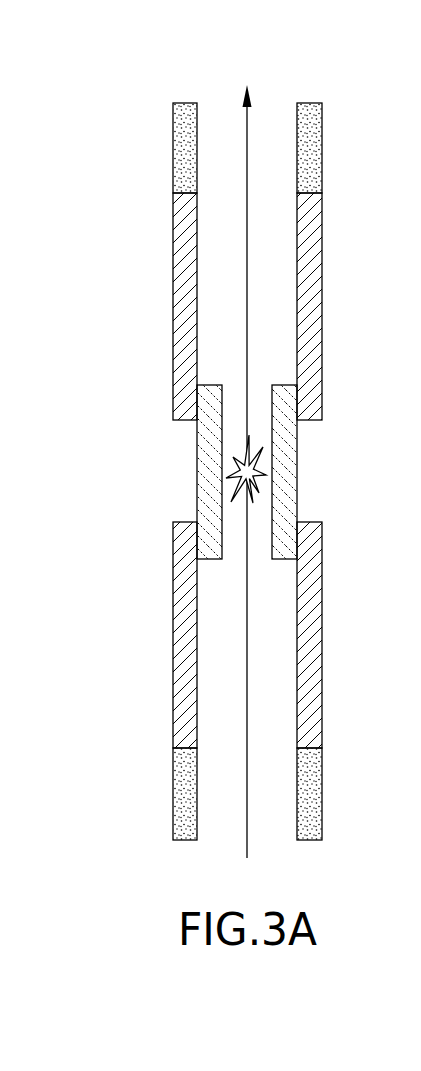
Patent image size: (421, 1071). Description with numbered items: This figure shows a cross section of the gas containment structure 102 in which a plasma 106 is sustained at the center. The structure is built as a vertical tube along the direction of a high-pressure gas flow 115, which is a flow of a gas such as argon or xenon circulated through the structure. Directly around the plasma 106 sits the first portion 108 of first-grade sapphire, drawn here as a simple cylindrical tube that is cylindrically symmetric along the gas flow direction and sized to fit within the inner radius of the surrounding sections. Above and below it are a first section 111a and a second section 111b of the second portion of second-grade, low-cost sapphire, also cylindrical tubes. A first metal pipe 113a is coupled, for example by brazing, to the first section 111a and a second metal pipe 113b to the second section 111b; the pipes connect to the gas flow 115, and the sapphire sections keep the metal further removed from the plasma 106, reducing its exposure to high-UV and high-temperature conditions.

The gas containment structure 102 is at (105, 62).
The plasma 106 is at (255, 468).
The first portion of first-grade sapphire 108 is at (194, 470).
The first section of second portion of second-grade sapphire 111a is at (173, 645).
The second section of second portion of second-grade sapphire 111b is at (173, 290).
The first metal pipe 113a is at (173, 795).
The second metal pipe 113b is at (172, 148).
The high-pressure gas flow 115 is at (247, 288).